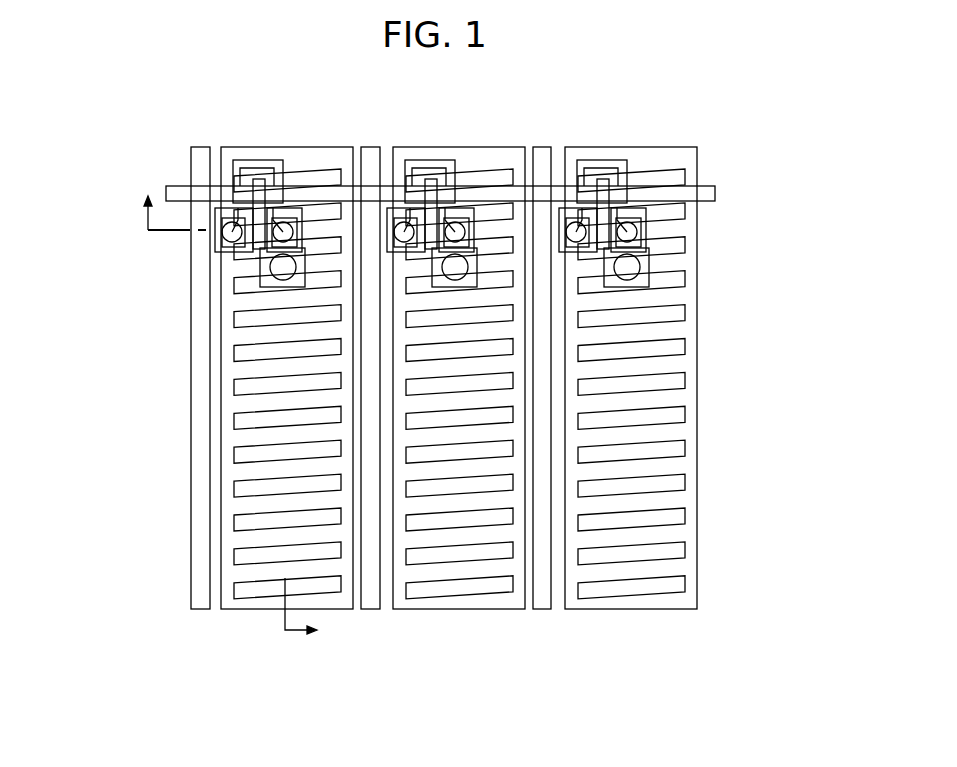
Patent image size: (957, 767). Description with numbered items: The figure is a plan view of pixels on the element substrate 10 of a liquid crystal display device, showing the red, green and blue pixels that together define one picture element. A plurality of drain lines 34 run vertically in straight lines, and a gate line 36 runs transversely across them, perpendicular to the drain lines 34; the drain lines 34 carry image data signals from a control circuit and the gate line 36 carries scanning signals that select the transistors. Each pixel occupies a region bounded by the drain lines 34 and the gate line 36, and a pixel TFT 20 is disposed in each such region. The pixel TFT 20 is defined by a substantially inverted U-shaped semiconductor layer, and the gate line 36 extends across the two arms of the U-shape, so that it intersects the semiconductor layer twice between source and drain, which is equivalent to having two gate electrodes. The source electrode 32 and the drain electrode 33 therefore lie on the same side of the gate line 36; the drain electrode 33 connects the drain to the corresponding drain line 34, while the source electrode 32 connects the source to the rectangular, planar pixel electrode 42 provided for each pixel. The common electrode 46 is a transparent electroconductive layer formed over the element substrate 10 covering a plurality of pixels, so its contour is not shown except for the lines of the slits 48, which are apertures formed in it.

The element substrate 10 is at (677, 121).
The pixel TFT 20 is at (298, 159).
The source electrode 32 is at (260, 267).
The drain electrode 33 is at (220, 238).
The drain line 34 is at (193, 610).
The gate line 36 is at (166, 193).
The pixel electrode 42 is at (330, 603).
The common electrode 46 is at (690, 397).
The slit 48 is at (248, 592).